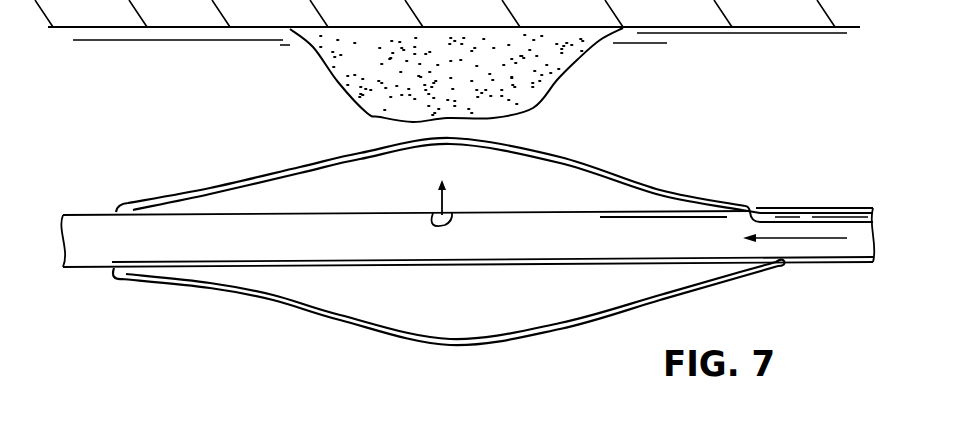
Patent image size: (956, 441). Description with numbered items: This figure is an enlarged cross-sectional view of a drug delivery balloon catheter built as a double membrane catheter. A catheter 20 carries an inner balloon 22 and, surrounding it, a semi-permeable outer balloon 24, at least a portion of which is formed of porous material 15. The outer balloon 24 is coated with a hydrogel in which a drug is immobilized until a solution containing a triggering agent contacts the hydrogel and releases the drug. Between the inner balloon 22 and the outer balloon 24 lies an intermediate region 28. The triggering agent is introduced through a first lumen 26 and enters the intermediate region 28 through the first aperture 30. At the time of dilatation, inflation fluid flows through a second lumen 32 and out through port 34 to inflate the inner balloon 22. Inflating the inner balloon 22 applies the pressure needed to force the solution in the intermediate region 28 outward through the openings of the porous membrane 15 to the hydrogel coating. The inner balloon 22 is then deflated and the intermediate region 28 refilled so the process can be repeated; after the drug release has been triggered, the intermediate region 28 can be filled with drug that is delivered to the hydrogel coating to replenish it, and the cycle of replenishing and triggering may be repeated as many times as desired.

The porous material 15 is at (508, 133).
The catheter 20 is at (612, 263).
The inner balloon 22 is at (650, 178).
The outer balloon 24 is at (608, 165).
The first lumen 26 is at (815, 209).
The intermediate region 28 is at (573, 157).
The first aperture 30 is at (752, 207).
The second lumen 32 is at (858, 246).
The port 34 is at (451, 211).